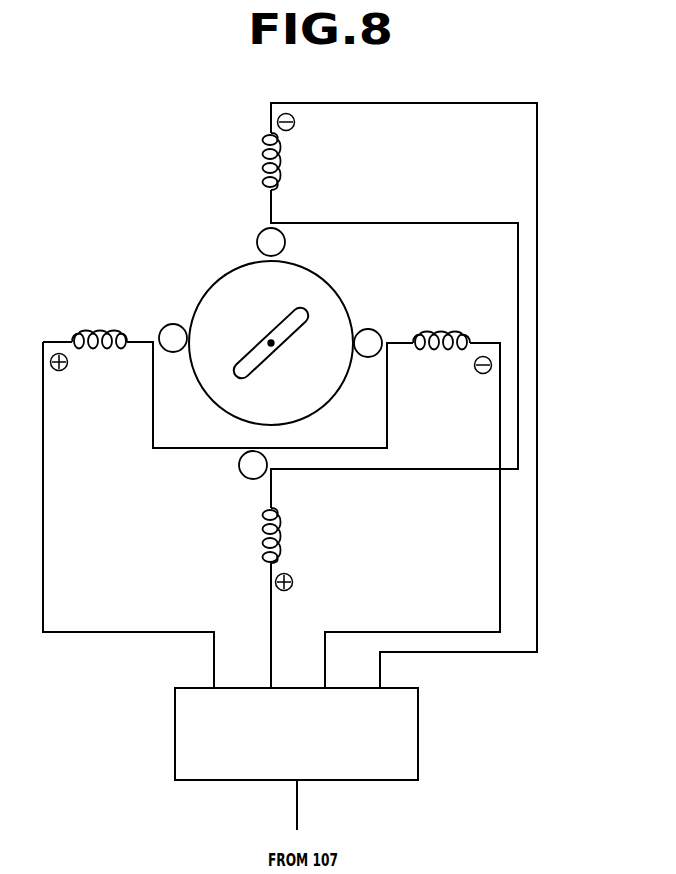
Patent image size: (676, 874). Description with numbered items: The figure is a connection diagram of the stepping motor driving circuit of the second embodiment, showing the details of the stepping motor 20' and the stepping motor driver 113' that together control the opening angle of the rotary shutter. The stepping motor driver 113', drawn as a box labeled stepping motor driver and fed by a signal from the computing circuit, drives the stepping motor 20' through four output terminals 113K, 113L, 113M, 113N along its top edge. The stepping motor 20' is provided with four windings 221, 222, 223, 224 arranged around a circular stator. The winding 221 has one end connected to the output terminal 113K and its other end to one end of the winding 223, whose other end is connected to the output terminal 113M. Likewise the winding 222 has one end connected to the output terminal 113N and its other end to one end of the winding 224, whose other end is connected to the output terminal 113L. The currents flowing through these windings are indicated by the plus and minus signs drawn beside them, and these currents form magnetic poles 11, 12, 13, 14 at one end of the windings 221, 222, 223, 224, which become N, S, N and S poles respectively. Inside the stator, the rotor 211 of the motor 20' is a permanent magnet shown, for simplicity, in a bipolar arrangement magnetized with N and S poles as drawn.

The stepping motor 20' is at (247, 332).
The rotor 211 is at (253, 367).
The magnetic pole 11 is at (173, 338).
The magnetic pole 12 is at (271, 242).
The magnetic pole 13 is at (368, 343).
The magnetic pole 14 is at (253, 465).
The winding 221 is at (98, 349).
The winding 222 is at (262, 168).
The winding 223 is at (440, 350).
The winding 224 is at (262, 543).
The stepping motor driver 113' is at (273, 734).
The output terminal 113K is at (195, 674).
The output terminal 113L is at (249, 674).
The output terminal 113M is at (303, 674).
The output terminal 113N is at (357, 674).